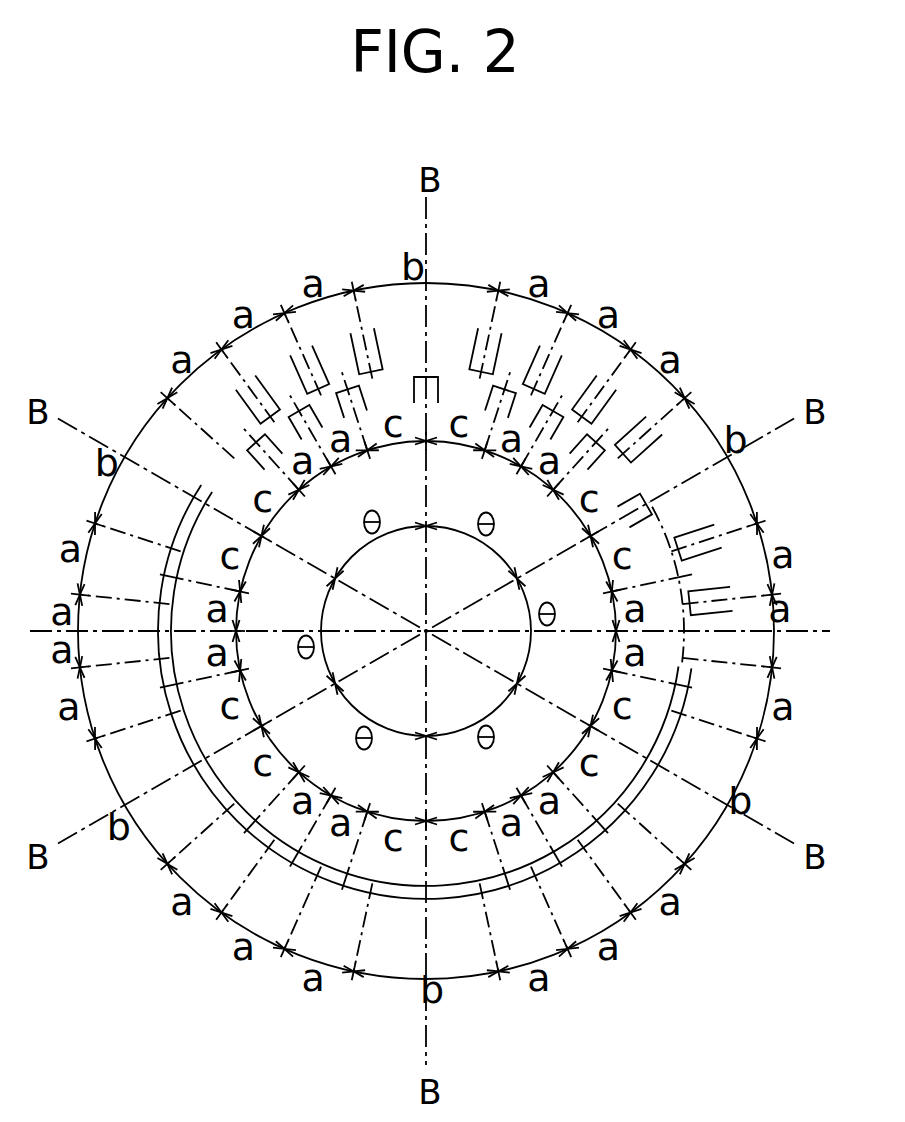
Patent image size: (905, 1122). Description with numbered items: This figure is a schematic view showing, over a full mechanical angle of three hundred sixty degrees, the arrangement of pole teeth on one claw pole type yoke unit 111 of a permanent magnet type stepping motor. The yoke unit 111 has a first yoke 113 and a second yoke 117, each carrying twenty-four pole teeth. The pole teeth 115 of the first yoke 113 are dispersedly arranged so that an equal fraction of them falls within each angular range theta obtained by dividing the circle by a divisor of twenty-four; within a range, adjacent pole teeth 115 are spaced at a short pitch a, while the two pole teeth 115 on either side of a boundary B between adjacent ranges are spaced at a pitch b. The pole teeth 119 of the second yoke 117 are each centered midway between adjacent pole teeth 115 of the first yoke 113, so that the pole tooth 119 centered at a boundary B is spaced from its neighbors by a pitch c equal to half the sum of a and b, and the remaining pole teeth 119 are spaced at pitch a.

The claw pole type yoke unit 111 is at (806, 722).
The first yoke 113 is at (693, 660).
The pole teeth 115 is at (255, 405).
The second yoke 117 is at (685, 690).
The pole teeth 119 is at (246, 438).